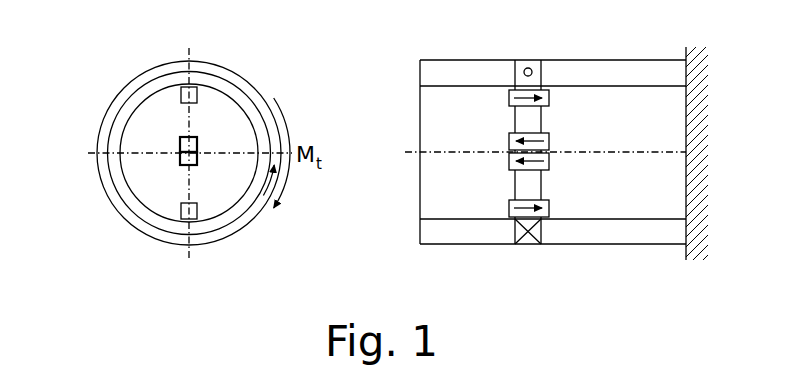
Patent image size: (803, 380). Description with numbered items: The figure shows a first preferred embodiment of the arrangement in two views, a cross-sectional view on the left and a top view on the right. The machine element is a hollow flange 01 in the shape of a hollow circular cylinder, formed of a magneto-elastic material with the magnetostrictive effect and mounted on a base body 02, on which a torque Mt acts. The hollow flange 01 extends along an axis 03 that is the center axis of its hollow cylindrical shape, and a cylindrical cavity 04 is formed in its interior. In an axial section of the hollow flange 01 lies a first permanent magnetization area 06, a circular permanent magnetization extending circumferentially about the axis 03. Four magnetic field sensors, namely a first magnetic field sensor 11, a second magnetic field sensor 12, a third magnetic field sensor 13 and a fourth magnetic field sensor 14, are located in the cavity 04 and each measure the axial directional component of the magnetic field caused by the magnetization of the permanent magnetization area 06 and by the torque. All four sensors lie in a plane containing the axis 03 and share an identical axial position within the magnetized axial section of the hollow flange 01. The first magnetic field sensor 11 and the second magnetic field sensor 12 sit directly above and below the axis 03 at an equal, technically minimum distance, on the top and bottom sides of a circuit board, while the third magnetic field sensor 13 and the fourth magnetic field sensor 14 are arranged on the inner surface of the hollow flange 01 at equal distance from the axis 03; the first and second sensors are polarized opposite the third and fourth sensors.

The hollow flange 01 is at (228, 73).
The base body 02 is at (705, 67).
The axis 03 is at (182, 157).
The cylindrical cavity 04 is at (137, 135).
The first permanent magnetization area 06 is at (110, 172).
The first magnetic field sensor 11 is at (187, 135).
The second magnetic field sensor 12 is at (195, 166).
The third magnetic field sensor 13 is at (185, 89).
The fourth magnetic field sensor 14 is at (187, 213).